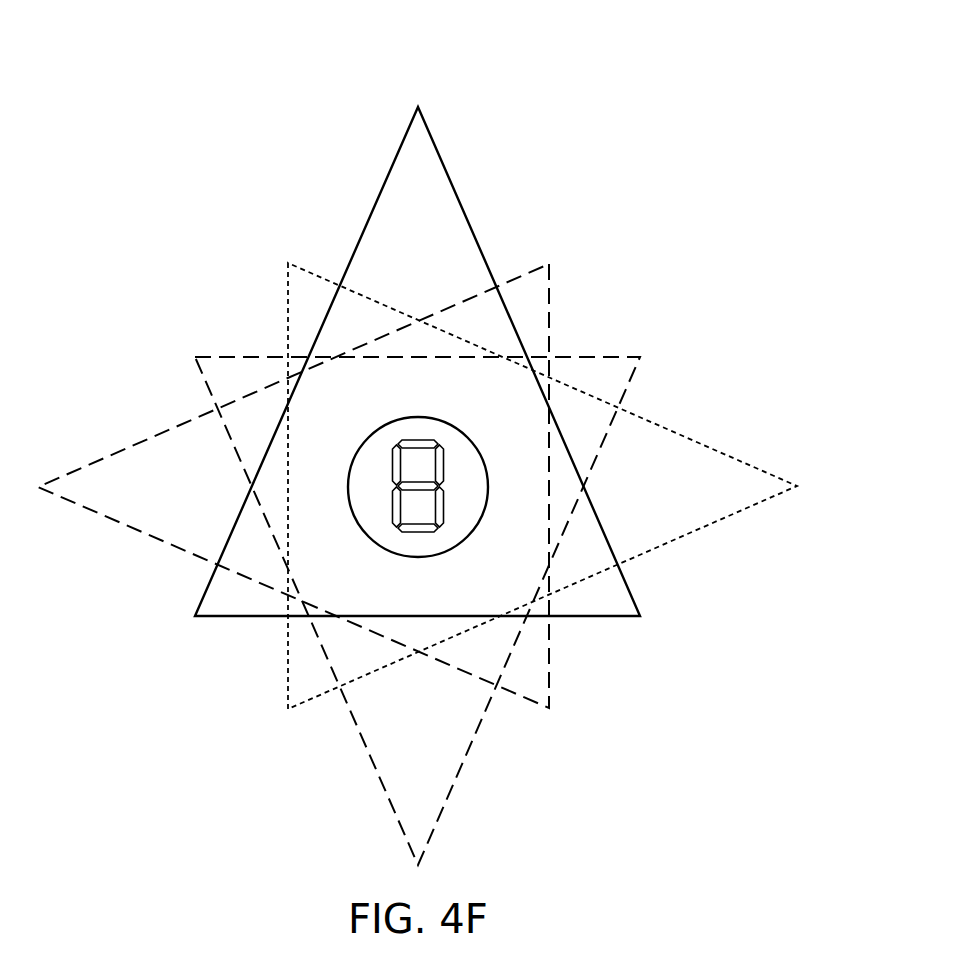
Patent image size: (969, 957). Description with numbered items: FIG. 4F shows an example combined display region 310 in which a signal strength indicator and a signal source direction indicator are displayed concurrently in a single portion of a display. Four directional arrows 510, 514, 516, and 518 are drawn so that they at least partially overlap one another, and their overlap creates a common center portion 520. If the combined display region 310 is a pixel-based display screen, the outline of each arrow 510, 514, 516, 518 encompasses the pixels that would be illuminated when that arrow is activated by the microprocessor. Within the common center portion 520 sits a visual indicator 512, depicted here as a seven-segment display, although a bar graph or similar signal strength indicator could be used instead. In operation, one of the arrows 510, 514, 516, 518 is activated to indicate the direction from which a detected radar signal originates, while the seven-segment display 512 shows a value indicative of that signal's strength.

The combined display region 310 is at (588, 113).
The directional arrow 510 is at (457, 190).
The visual indicator 512 is at (418, 533).
The directional arrow 514 is at (722, 453).
The directional arrow 516 is at (634, 357).
The directional arrow 518 is at (550, 266).
The common center portion 520 is at (368, 437).